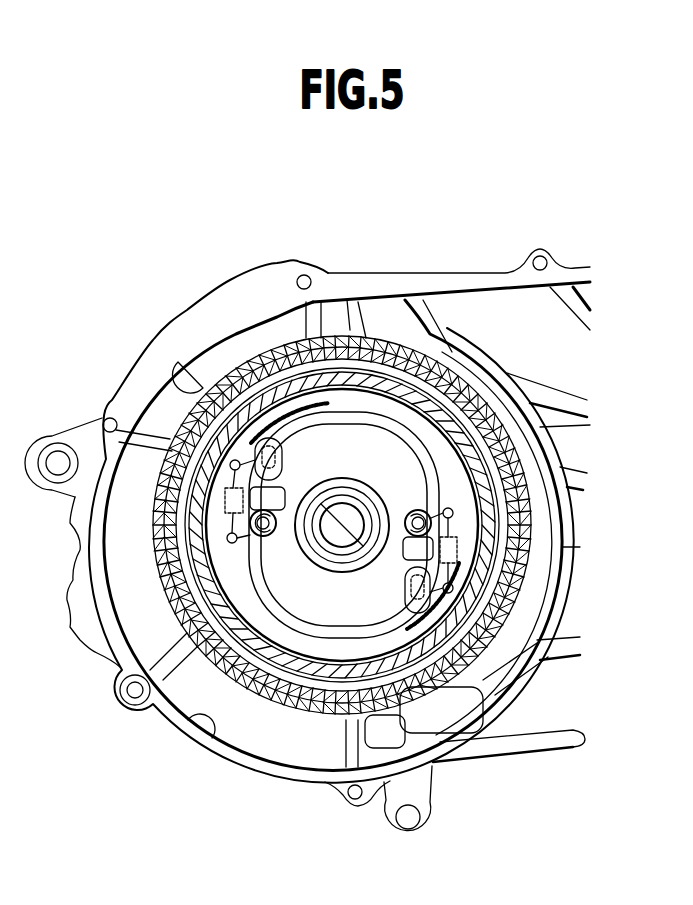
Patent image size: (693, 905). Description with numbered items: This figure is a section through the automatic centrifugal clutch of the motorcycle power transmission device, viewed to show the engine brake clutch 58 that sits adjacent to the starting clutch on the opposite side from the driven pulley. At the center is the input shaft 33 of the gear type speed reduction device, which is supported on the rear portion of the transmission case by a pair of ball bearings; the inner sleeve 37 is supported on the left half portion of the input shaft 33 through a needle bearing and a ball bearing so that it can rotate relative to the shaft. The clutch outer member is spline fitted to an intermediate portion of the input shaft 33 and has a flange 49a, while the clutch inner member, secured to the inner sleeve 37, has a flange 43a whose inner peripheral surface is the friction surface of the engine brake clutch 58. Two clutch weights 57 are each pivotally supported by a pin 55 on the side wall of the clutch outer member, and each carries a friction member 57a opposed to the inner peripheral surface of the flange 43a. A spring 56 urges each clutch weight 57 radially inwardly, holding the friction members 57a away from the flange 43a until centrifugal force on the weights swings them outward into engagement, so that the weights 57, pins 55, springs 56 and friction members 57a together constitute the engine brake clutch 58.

The input shaft 33 is at (354, 513).
The inner sleeve 37 is at (325, 492).
The flange 43a is at (303, 675).
The flange 49a is at (481, 402).
The pin 55 is at (435, 511).
The spring 56 is at (457, 550).
The clutch weight 57 is at (349, 404).
The friction member 57a is at (284, 393).
The engine brake clutch 58 is at (156, 405).